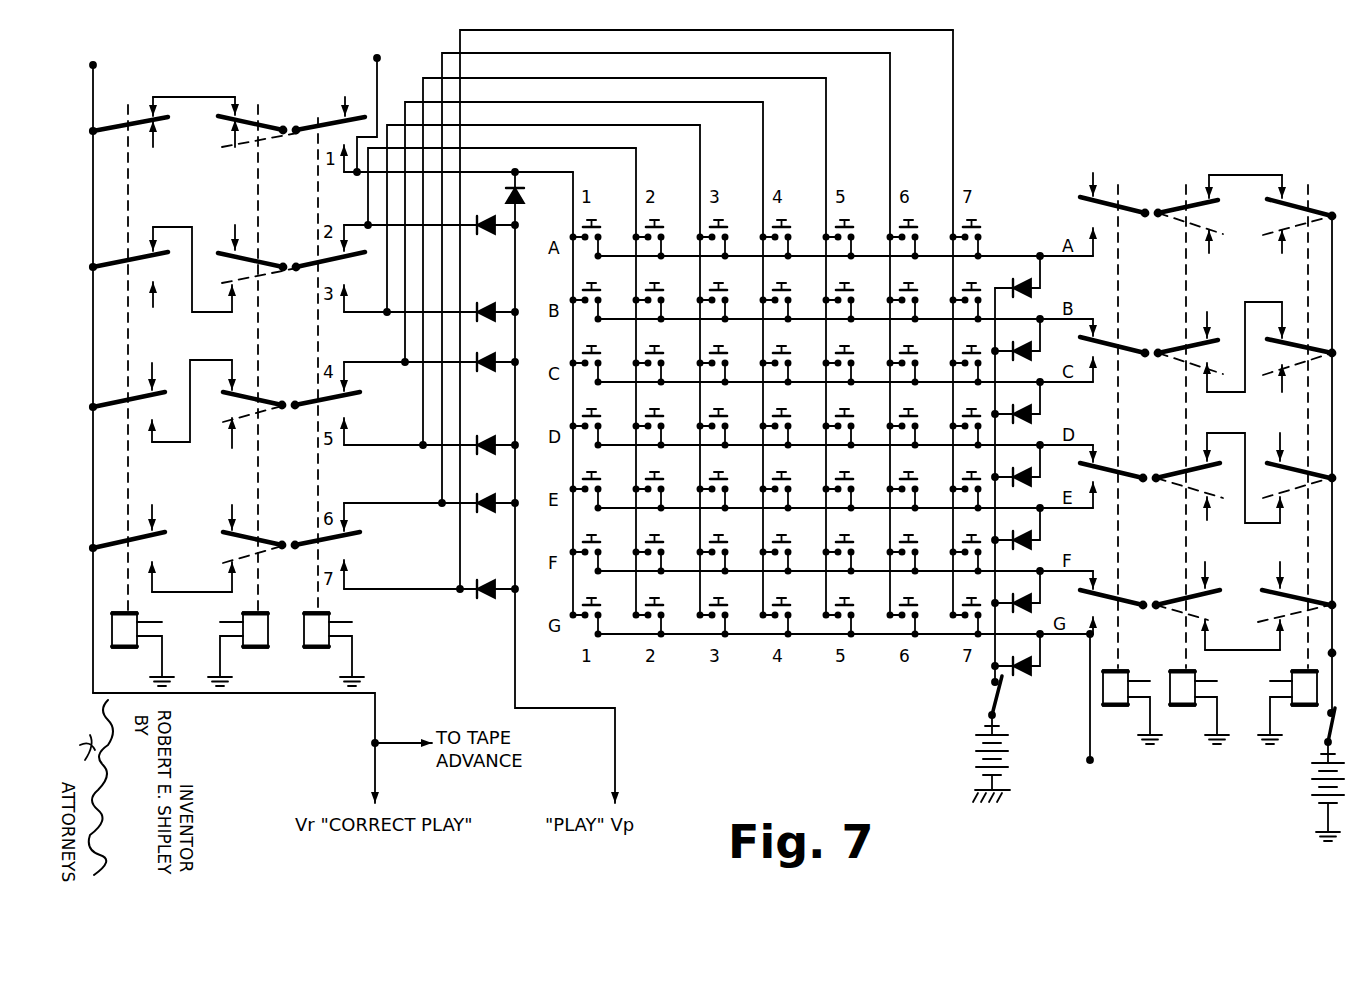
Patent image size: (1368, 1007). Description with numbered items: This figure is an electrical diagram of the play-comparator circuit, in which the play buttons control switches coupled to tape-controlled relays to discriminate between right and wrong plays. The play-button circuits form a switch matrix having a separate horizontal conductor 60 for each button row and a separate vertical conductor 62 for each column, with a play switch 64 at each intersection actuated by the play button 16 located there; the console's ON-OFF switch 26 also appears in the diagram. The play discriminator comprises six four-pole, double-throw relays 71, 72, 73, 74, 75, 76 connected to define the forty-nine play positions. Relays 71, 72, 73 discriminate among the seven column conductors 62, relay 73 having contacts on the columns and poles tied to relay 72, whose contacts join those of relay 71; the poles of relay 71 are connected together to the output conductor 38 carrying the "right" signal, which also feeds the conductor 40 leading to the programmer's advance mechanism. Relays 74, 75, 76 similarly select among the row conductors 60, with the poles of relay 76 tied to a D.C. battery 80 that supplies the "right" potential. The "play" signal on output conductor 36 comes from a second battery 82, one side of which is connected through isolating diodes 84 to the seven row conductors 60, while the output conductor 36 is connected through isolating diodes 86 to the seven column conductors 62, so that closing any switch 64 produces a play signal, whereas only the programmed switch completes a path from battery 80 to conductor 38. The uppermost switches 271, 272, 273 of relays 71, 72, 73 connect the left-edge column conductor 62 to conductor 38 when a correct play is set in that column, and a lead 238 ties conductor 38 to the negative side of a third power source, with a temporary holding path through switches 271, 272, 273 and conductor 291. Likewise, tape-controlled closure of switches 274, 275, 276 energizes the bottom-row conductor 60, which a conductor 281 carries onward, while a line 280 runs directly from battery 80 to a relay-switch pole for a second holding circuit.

The play button 16 is at (784, 428).
The ON-OFF switch 26 is at (1000, 702).
The output conductor 36 is at (615, 726).
The output conductor 38 is at (91, 690).
The conductor 40 is at (402, 741).
The horizontal conductor 60 is at (1008, 256).
The vertical conductor 62 is at (560, 174).
The play switch 64 is at (848, 244).
The relay 71 is at (135, 97).
The relay 72 is at (248, 97).
The relay 73 is at (333, 97).
The relay 74 is at (1110, 175).
The relay 75 is at (1197, 175).
The relay 76 is at (1287, 175).
The D.C. battery 80 is at (1312, 791).
The second battery 82 is at (1003, 762).
The isolating diodes 84 is at (1030, 293).
The isolating diodes 86 is at (524, 192).
The lead 238 is at (93, 65).
The switch 271 is at (156, 131).
The switch 272 is at (232, 127).
The switch 273 is at (338, 128).
The switch 274 is at (1102, 612).
The switch 275 is at (1213, 606).
The switch 276 is at (1290, 600).
The line 280 is at (1326, 654).
The conductor 281 is at (1094, 761).
The conductor 291 is at (378, 58).